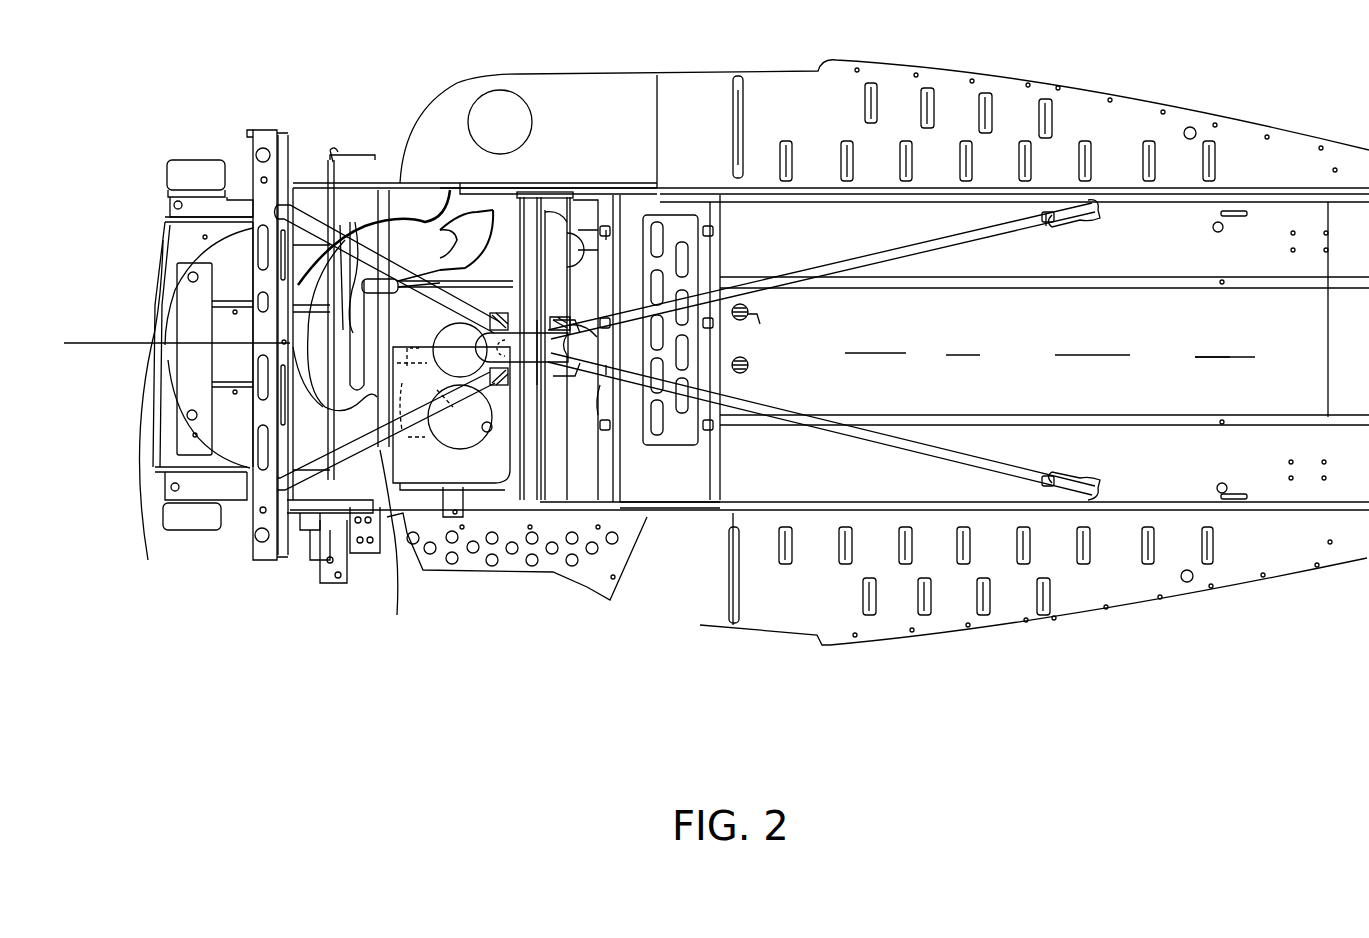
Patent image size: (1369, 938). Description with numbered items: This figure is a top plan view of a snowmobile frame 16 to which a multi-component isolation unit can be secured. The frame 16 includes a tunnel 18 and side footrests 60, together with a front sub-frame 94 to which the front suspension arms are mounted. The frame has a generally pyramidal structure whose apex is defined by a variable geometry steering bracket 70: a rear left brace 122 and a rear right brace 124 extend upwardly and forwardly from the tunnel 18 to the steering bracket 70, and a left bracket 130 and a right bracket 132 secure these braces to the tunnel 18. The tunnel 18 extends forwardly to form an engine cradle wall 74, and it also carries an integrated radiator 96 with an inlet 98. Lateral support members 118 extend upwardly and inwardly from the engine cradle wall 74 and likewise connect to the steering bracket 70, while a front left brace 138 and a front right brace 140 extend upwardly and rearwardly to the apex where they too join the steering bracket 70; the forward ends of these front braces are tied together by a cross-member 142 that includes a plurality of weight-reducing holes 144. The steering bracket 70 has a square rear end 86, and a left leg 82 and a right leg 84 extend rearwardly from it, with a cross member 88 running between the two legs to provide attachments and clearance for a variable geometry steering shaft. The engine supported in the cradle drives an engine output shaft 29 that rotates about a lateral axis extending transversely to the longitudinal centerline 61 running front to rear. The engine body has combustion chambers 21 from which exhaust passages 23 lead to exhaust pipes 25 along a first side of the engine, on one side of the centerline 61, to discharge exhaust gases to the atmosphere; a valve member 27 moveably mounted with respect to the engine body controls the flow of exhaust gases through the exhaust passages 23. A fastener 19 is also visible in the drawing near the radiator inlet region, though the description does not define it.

The snowmobile frame 16 is at (516, 632).
The tunnel 18 is at (1320, 242).
The fastener 19 is at (760, 324).
The combustion chambers 21 is at (445, 330).
The exhaust passages 23 is at (409, 371).
The exhaust pipes 25 is at (326, 180).
The valve member 27 is at (379, 552).
The engine output shaft 29 is at (460, 570).
The side footrests 60 is at (1128, 100).
The longitudinal centerline 61 is at (1217, 357).
The variable geometry steering bracket 70 is at (504, 381).
The engine cradle wall 74 is at (493, 183).
The left leg 82 is at (590, 420).
The right leg 84 is at (650, 280).
The square rear end 86 is at (573, 313).
The cross member 88 is at (720, 349).
The front sub-frame 94 is at (177, 375).
The integrated radiator 96 is at (946, 367).
The inlet 98 is at (748, 370).
The lateral support members 118 is at (568, 210).
The rear left brace 122 is at (787, 430).
The rear right brace 124 is at (808, 265).
The left bracket 130 is at (1100, 492).
The right bracket 132 is at (1100, 214).
The front left brace 138 is at (451, 432).
The front right brace 140 is at (370, 160).
The cross-member 142 is at (258, 142).
The weight-reducing holes 144 is at (214, 359).